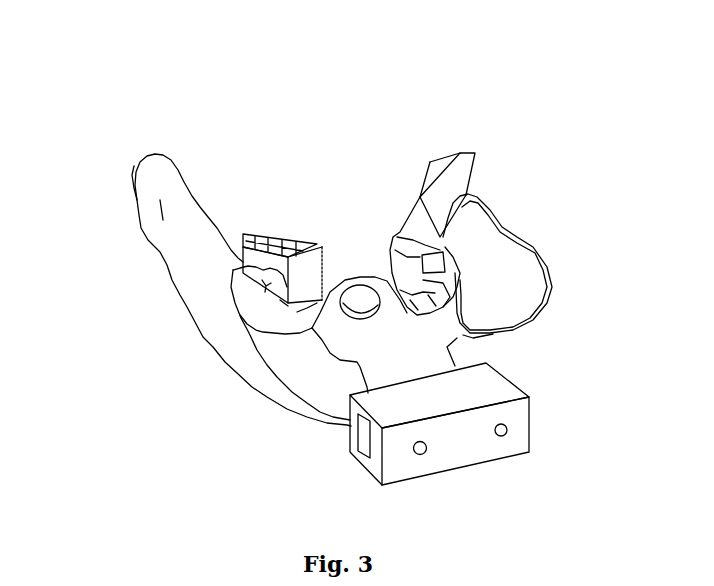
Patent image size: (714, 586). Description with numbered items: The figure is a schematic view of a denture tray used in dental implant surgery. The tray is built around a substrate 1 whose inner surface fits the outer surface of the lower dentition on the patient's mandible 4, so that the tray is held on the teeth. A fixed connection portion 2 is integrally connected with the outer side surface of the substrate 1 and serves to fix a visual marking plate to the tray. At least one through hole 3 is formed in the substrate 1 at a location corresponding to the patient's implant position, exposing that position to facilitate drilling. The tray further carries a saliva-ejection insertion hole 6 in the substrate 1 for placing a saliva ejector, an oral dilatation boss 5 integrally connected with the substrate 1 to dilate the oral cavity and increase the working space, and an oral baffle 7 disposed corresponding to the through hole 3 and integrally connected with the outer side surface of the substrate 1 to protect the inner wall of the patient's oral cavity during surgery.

The substrate of the denture tray 1 is at (306, 340).
The fixed connection portion 2 is at (432, 402).
The through hole 3 is at (437, 267).
The patient's mandible 4 is at (160, 198).
The oral dilatation boss 5 is at (283, 250).
The saliva-ejection insertion hole 6 is at (357, 313).
The oral baffle 7 is at (479, 304).